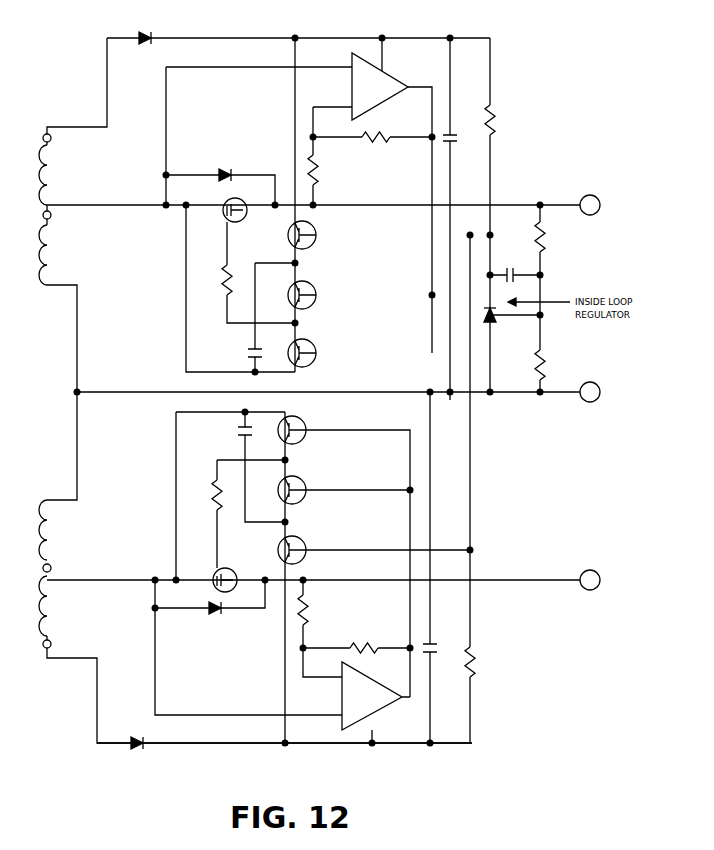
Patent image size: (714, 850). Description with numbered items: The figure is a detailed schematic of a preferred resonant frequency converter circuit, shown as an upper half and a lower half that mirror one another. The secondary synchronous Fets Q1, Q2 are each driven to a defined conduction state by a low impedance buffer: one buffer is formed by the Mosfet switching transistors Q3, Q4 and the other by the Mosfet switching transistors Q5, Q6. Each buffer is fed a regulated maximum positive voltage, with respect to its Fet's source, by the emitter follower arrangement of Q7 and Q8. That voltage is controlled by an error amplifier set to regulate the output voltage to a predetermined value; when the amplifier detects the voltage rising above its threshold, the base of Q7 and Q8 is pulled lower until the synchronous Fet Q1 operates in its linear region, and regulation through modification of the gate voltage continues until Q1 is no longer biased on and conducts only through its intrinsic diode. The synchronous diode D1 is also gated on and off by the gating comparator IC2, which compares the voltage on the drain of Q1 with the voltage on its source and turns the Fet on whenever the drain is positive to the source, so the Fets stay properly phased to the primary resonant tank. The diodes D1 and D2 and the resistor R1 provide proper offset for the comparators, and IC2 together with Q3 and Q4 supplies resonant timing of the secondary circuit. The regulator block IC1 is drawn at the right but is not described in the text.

The synchronous diode D1 is at (143, 47).
The diode D2 is at (138, 761).
The secondary synchronous Fet Q1 is at (232, 220).
The secondary synchronous Fet Q2 is at (224, 577).
The Mosfet switching transistor Q3 is at (310, 300).
The Mosfet switching transistor Q4 is at (310, 359).
The Mosfet switching transistor Q5 is at (302, 496).
The Mosfet switching transistor Q6 is at (302, 554).
The emitter follower Fet Q7 is at (310, 240).
The emitter follower Fet Q8 is at (301, 436).
The inside loop regulator IC1 is at (498, 326).
The gating comparator IC2 is at (380, 86).
The resistor R1 is at (500, 120).